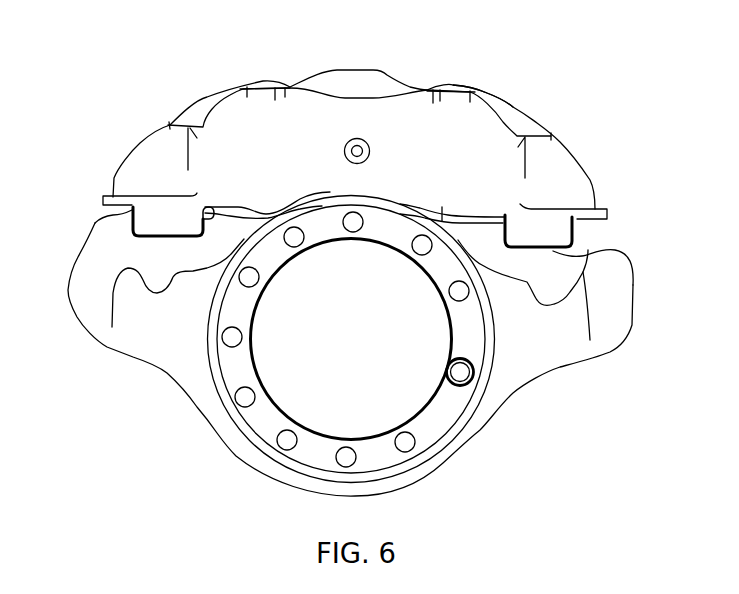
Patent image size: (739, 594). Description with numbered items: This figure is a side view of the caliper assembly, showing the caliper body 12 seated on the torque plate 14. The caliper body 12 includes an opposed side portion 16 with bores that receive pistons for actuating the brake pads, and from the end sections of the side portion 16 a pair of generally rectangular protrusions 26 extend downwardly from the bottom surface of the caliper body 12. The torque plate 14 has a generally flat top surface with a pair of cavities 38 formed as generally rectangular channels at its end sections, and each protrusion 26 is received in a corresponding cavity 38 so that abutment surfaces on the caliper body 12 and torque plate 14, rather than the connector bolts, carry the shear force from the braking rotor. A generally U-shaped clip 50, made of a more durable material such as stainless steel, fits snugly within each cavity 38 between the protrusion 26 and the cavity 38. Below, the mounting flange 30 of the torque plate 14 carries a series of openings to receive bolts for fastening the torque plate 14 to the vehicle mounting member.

The caliper body 12 is at (577, 156).
The torque plate 14 is at (623, 336).
The side portion 16 is at (485, 122).
The protrusion 26 is at (155, 222).
The mounting flange 30 is at (259, 418).
The cavity 38 is at (147, 239).
The clip 50 is at (217, 215).